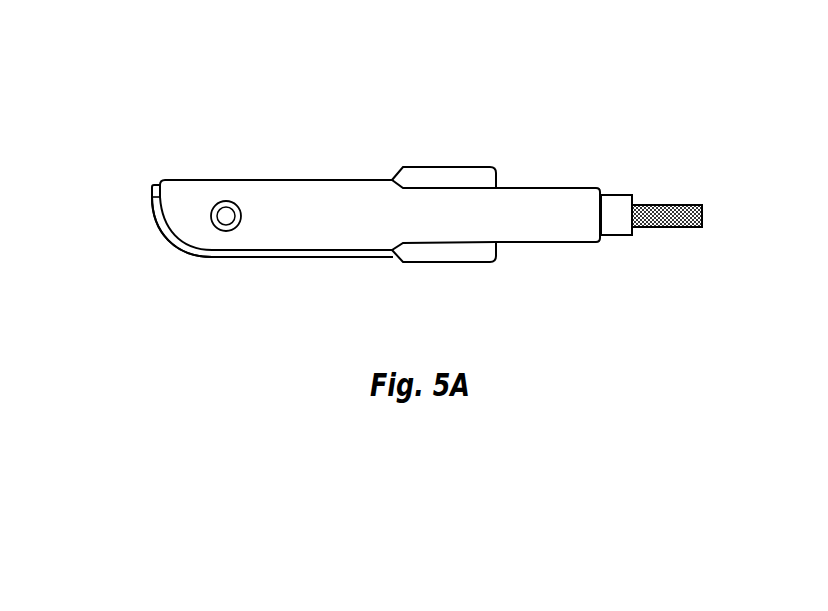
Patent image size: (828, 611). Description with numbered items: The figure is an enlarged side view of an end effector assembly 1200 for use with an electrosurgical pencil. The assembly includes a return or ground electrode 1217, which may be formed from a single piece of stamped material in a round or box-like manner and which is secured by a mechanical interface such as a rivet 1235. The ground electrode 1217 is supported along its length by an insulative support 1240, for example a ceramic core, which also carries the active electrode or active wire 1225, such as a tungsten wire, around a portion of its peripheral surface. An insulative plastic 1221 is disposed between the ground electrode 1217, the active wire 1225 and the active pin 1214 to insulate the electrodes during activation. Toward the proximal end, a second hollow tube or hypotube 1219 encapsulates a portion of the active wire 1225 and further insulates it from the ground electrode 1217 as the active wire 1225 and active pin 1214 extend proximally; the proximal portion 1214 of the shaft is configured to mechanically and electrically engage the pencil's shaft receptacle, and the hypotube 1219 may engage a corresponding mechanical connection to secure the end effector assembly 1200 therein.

The end effector assembly 1200 is at (146, 138).
The ground electrode 1217 is at (343, 192).
The insulative plastic 1221 is at (447, 167).
The hypotube 1219 is at (618, 195).
The proximal portion 1214 is at (681, 205).
The rivet 1235 is at (231, 212).
The active wire 1225 is at (155, 219).
The insulative support 1240 is at (190, 258).